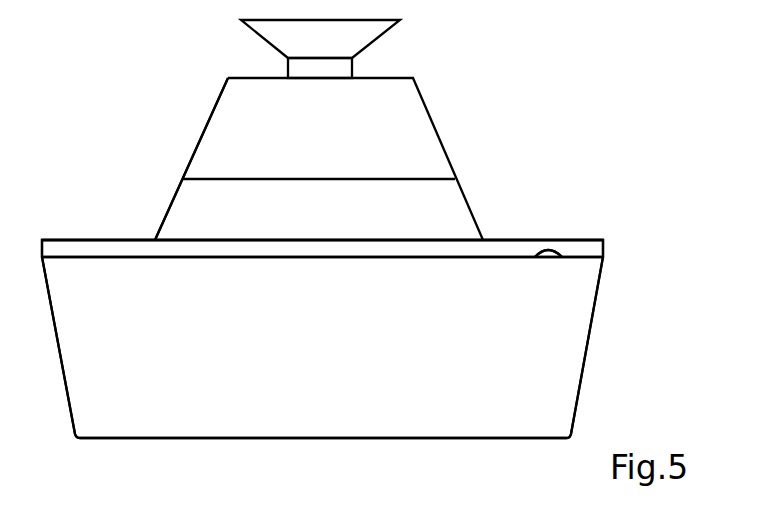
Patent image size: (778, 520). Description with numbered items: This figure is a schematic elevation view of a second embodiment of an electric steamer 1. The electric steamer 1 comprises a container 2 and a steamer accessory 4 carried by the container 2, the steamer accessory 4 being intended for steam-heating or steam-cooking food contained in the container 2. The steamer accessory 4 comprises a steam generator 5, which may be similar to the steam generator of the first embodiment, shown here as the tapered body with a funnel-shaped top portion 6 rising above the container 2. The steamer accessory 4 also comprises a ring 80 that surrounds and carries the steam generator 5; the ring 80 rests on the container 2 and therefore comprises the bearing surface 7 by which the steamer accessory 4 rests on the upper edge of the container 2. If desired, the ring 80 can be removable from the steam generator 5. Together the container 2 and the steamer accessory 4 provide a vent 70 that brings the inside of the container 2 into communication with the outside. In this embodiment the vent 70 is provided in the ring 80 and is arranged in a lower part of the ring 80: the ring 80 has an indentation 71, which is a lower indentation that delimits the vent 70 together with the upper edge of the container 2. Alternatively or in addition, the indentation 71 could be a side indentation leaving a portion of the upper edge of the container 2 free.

The electric steamer 1 is at (91, 462).
The container 2 is at (587, 352).
The steamer accessory 4 is at (455, 170).
The steam generator 5 is at (175, 218).
The top housing section 6 is at (426, 137).
The bearing surface 7 is at (497, 268).
The vent 70 is at (550, 257).
The indentation 71 is at (549, 240).
The ring 80 is at (93, 250).